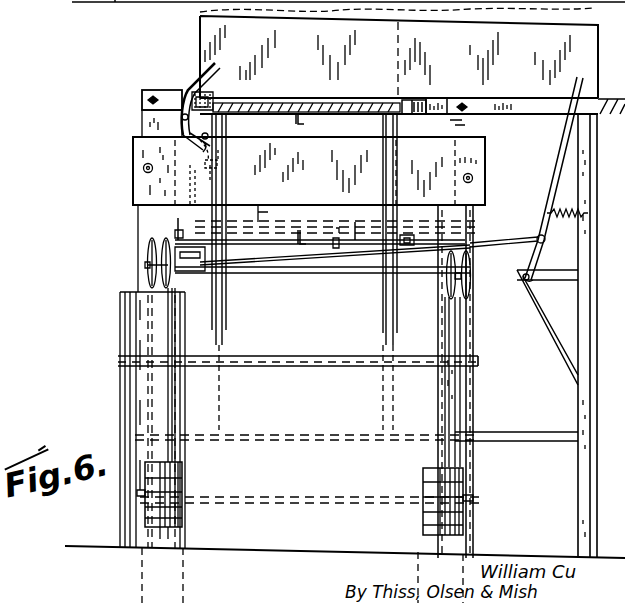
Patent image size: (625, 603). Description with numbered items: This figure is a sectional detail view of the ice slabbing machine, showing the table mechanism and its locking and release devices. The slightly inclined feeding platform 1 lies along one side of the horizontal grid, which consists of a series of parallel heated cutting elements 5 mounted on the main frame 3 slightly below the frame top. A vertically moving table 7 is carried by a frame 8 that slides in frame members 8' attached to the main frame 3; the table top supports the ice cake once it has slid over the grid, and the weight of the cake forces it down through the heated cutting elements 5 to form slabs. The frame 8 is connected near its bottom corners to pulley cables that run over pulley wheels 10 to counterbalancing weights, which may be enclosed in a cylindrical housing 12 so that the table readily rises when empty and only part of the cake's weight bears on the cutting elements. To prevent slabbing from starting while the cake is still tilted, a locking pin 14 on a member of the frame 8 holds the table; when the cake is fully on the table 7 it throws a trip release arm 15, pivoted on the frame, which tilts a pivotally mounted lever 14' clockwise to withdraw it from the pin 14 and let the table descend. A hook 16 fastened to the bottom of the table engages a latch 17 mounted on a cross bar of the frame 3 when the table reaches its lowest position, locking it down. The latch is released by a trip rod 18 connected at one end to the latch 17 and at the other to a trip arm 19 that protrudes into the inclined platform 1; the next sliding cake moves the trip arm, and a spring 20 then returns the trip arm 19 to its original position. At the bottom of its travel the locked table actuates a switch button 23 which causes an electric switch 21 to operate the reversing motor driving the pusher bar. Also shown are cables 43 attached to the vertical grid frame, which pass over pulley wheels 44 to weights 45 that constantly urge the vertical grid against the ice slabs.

The feeding platform 1 is at (505, 97).
The main frame 3 is at (146, 90).
The heated cutting elements 5 is at (325, 102).
The vertically moving table 7 is at (280, 97).
The frame 8 is at (302, 272).
The frame members 8' is at (311, 229).
The pulley wheels 10 is at (150, 242).
The cylindrical housing 12 is at (118, 352).
The locking pin 14 is at (233, 160).
The pivotally mounted lever 14' is at (235, 166).
The trip release arm 15 is at (205, 80).
The hook 16 is at (293, 122).
The latch 17 is at (315, 258).
The trip rod 18 is at (509, 241).
The trip arm 19 is at (576, 80).
The spring 20 is at (566, 206).
The electric switch 21 is at (412, 238).
The switch button 23 is at (400, 238).
The cables 43 is at (176, 452).
The pulley wheels 44 is at (160, 238).
The weights 45 is at (175, 471).